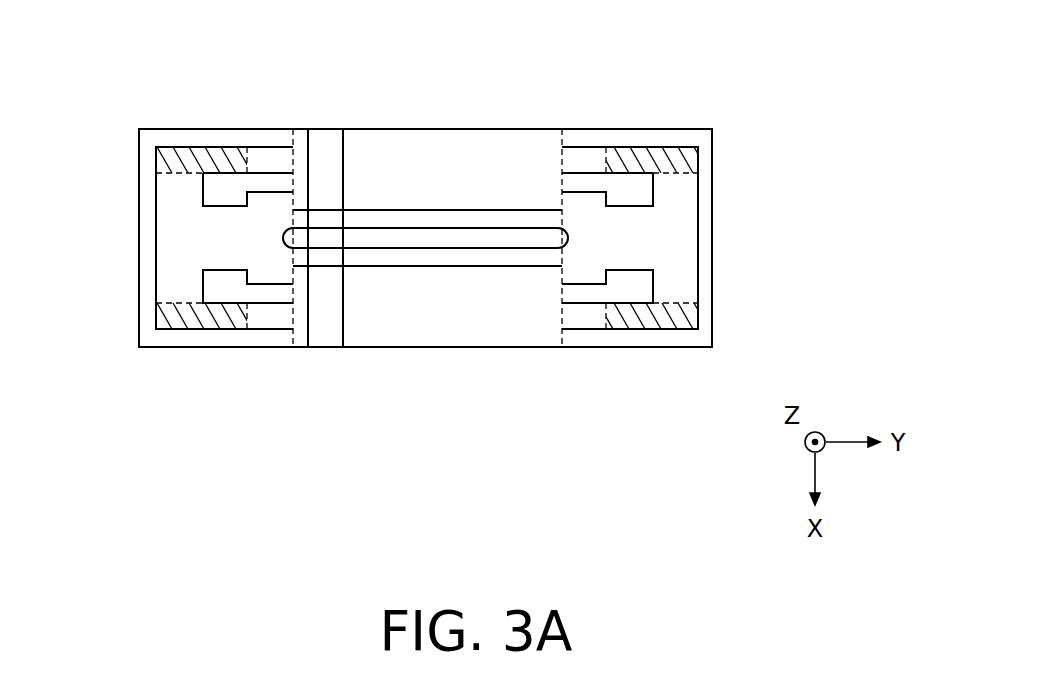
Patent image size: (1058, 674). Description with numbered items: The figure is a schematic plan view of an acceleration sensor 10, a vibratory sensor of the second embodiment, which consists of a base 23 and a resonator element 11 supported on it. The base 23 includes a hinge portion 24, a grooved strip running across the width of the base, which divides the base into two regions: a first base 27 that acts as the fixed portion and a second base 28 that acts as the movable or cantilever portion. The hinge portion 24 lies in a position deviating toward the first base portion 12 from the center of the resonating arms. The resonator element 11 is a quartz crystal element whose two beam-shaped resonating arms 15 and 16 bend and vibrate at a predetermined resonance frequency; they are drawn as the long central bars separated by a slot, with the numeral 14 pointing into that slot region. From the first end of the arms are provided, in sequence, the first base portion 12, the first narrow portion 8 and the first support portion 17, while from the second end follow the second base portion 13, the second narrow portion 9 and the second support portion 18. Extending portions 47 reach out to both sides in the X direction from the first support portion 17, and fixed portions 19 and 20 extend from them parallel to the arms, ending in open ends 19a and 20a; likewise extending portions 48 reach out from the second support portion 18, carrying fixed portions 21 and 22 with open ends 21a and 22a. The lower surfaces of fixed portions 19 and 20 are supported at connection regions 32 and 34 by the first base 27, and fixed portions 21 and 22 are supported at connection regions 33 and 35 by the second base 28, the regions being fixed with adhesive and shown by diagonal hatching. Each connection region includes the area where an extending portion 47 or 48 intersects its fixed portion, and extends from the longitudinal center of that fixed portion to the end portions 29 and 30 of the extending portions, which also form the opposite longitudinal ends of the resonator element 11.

The first narrow portion 8 is at (222, 215).
The second narrow portion 9 is at (628, 220).
The acceleration sensor 10 is at (753, 72).
The resonator element 11 is at (427, 225).
The first base portion 12 is at (268, 238).
The second base portion 13 is at (593, 237).
The slot (through hole) 14 is at (378, 236).
The resonating arm 15 is at (427, 219).
The resonating arm 16 is at (444, 257).
The first support portion 17 is at (177, 226).
The second support portion 18 is at (677, 225).
The fixed portion 19 is at (260, 158).
The open end 19a is at (293, 161).
The fixed portion 20 is at (252, 325).
The open end 20a is at (293, 318).
The fixed portion 21 is at (597, 157).
The open end 21a is at (562, 160).
The fixed portion 22 is at (590, 325).
The open end 22a is at (562, 316).
The base 23 is at (497, 358).
The hinge portion 24 is at (332, 333).
The first base 27 is at (139, 337).
The second base 28 is at (712, 332).
The end portion 29 is at (157, 157).
The end portion 30 is at (698, 150).
The connection region 32 is at (177, 326).
The connection region 33 is at (670, 326).
The connection region 34 is at (184, 142).
The connection region 35 is at (675, 143).
The extending portion 47 is at (177, 188).
The extending portion 48 is at (678, 188).